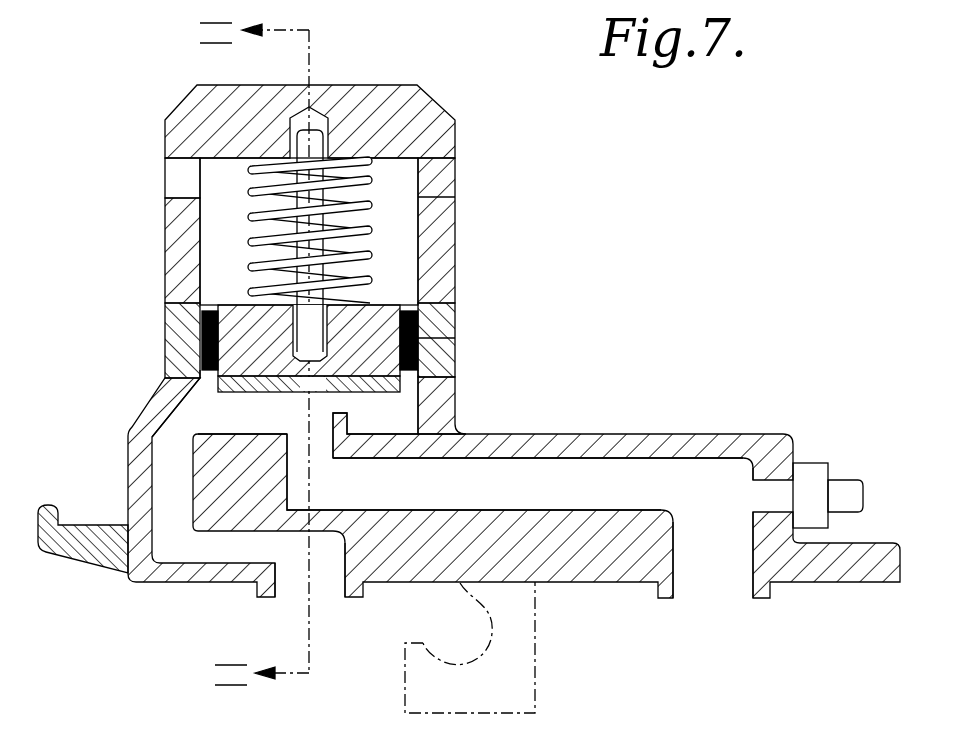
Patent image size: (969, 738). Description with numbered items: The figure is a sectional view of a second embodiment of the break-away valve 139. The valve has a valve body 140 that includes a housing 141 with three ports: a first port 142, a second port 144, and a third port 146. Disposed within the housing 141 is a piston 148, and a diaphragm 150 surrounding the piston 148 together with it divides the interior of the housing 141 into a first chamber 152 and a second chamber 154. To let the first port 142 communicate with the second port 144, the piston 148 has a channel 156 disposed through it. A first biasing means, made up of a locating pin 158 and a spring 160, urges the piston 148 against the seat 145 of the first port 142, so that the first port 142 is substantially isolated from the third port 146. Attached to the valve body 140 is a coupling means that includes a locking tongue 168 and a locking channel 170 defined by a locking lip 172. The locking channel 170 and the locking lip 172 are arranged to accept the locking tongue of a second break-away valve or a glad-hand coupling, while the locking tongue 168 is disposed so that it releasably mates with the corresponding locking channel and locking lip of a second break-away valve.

The break-away valve 139 is at (597, 278).
The valve body 140 is at (725, 433).
The housing 141 is at (456, 233).
The first port 142 is at (713, 583).
The second port 144 is at (178, 179).
The seat 145 is at (352, 415).
The third port 146 is at (292, 577).
The piston 148 is at (380, 390).
The diaphragm 150 is at (204, 340).
The first chamber 152 is at (223, 243).
The second chamber 154 is at (238, 412).
The channel 156 is at (322, 368).
The locating pin 158 is at (333, 125).
The spring 160 is at (363, 197).
The locking tongue 168 is at (77, 547).
The locking channel 170 is at (463, 638).
The locking lip 172 is at (408, 643).